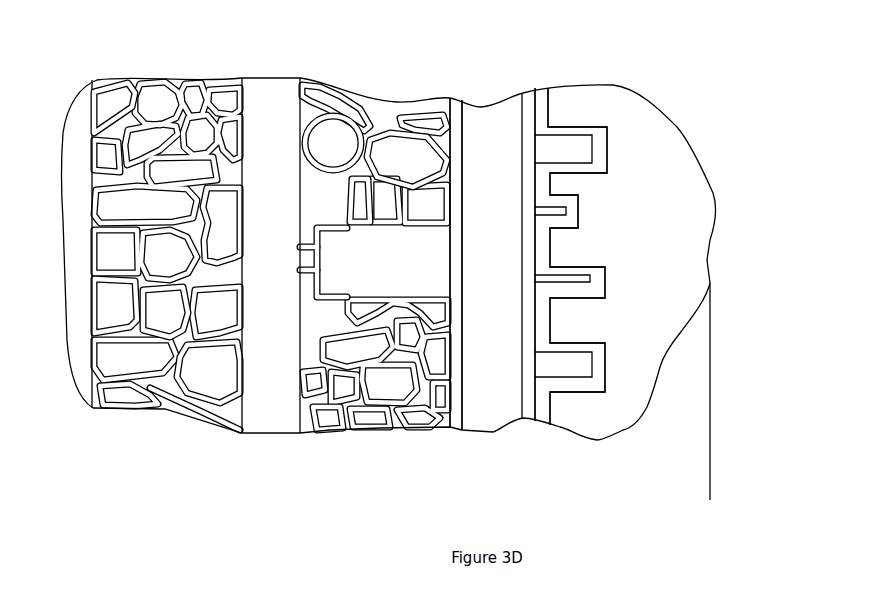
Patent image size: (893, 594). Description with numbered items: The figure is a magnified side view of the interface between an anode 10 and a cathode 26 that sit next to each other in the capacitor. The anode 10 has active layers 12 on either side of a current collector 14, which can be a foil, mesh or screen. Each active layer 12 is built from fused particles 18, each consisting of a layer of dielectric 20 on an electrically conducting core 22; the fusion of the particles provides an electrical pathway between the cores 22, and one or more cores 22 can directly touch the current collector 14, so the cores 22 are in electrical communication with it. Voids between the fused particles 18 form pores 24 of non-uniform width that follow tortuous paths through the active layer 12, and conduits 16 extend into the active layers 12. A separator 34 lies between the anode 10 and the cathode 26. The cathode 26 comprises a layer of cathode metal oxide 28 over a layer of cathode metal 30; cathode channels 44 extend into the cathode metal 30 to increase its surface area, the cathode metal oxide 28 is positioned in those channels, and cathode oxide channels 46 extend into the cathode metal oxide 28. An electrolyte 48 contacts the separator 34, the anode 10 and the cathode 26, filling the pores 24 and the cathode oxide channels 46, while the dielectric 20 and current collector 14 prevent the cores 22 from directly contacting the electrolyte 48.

The anode 10 is at (92, 437).
The active layer 12 is at (242, 48).
The current collector 14 is at (277, 113).
The conduit 16 is at (446, 257).
The fused particle 18 is at (90, 165).
The dielectric 20 is at (335, 448).
The core 22 is at (113, 93).
The pore 24 is at (178, 344).
The cathode 26 is at (535, 440).
The cathode metal oxide 28 is at (600, 149).
The cathode metal 30 is at (673, 172).
The separator 34 is at (477, 108).
The cathode channel 44 is at (565, 128).
The cathode oxide channel 46 is at (592, 157).
The electrolyte 48 is at (463, 182).